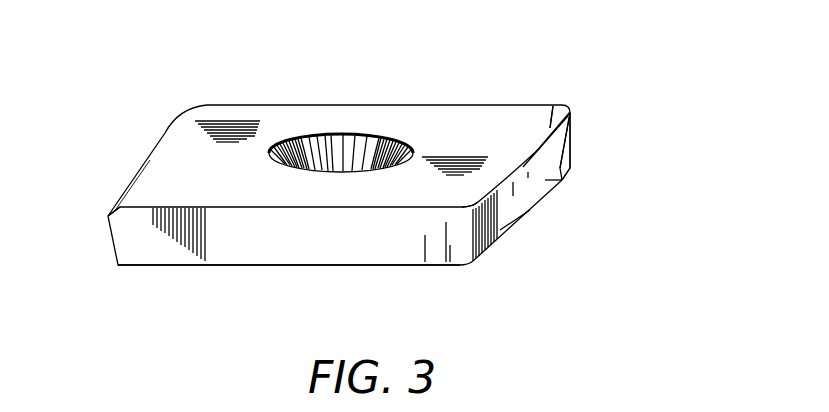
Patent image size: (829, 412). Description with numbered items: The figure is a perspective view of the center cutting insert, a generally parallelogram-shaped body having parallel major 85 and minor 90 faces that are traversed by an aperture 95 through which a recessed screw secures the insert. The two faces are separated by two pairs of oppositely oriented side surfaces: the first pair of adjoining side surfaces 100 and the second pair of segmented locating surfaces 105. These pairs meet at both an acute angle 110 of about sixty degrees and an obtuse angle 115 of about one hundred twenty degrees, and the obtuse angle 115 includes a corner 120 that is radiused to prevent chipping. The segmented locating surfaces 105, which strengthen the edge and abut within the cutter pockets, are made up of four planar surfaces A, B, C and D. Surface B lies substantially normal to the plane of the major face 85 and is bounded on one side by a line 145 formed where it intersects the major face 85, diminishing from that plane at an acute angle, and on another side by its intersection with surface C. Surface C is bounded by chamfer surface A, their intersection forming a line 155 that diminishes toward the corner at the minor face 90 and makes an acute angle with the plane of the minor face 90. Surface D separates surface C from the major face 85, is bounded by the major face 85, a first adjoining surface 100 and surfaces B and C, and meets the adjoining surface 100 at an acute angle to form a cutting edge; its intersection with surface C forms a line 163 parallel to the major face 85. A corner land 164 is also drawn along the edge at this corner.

The acute angle 110 is at (607, 75).
The obtuse angle 115 is at (142, 92).
The major face 85 is at (250, 113).
The aperture 95 is at (330, 148).
The first pair of adjoining side surfaces 100 is at (238, 243).
The minor face 90 is at (360, 266).
The second pair of segmented locating surfaces 105 is at (517, 213).
The corner 120 is at (474, 204).
The line 145 is at (533, 143).
The line 155 is at (567, 173).
The line 163 is at (565, 123).
The corner land 164 is at (568, 110).
The chamfer surface A is at (513, 214).
The surface B is at (547, 177).
The surface C is at (563, 140).
The surface D is at (552, 118).